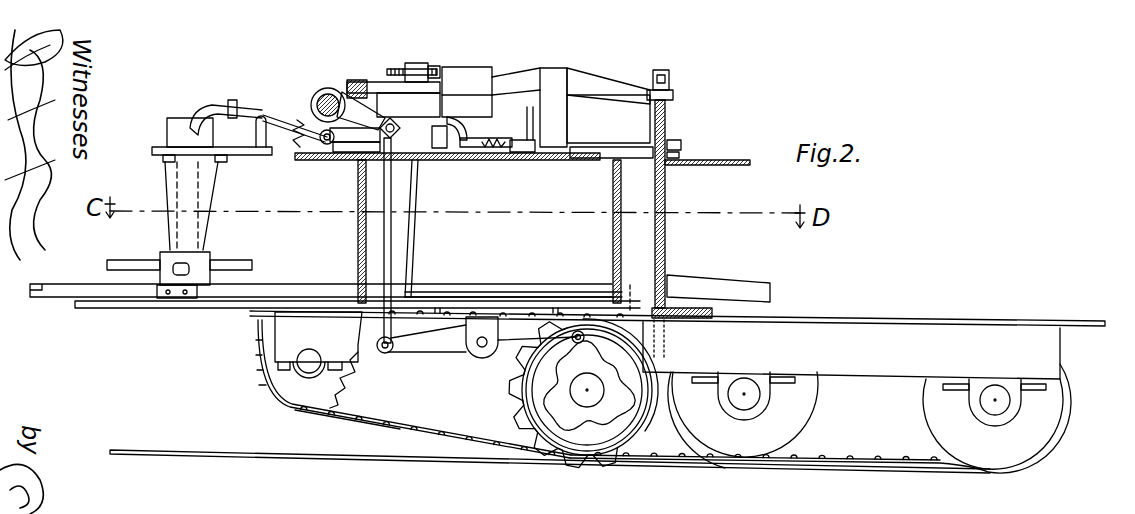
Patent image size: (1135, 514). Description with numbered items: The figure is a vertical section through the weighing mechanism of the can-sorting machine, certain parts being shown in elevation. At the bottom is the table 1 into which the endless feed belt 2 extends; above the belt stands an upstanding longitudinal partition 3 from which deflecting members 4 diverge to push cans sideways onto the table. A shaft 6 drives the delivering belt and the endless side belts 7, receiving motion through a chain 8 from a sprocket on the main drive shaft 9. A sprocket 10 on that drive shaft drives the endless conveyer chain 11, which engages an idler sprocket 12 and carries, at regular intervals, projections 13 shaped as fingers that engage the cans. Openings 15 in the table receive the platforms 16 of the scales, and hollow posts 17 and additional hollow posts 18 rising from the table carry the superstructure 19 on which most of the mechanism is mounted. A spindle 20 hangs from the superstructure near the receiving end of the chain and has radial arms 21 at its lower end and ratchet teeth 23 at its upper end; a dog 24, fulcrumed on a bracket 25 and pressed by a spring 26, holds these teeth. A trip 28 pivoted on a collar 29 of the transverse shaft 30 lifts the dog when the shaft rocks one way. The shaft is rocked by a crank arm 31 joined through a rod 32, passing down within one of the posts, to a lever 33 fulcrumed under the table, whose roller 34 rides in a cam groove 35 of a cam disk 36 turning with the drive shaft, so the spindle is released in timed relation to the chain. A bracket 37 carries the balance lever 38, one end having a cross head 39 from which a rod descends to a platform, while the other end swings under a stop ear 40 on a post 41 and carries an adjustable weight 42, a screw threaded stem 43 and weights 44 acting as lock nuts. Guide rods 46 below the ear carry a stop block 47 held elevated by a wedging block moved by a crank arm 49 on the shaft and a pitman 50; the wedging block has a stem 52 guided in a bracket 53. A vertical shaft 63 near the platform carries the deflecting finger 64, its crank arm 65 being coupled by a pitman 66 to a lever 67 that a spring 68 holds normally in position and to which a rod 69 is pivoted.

The table 1 is at (880, 338).
The endless feed belt 2 is at (93, 310).
The upstanding longitudinal partition 3 is at (68, 286).
The deflecting members 4 is at (289, 296).
The shaft 6 is at (744, 402).
The endless side belts 7 is at (993, 471).
The chain 8 is at (895, 465).
The main drive shaft 9 is at (585, 400).
The sprocket 10 is at (535, 430).
The endless conveyer chain 11 is at (452, 442).
The idler sprocket 12 is at (298, 397).
The projections 13 is at (368, 425).
The openings 15 is at (673, 103).
The platforms 16 is at (650, 292).
The hollow posts 17 is at (667, 194).
The hollow posts 18 is at (404, 274).
The superstructure 19 is at (742, 160).
The spindle 20 is at (173, 208).
The radial arms 21 is at (240, 262).
The ratchet teeth 23 is at (182, 118).
The dog 24 is at (218, 106).
The bracket 25 is at (260, 116).
The spring 26 is at (293, 148).
The trip 28 is at (308, 125).
The collar 29 is at (324, 130).
The transverse shaft 30 is at (322, 88).
The crank arm 31 is at (358, 116).
The rod 32 is at (403, 221).
The lever 33 is at (446, 346).
The roller 34 is at (578, 330).
The cam groove 35 is at (650, 355).
The cam disk 36 is at (612, 425).
The bracket 37 is at (556, 118).
The balance lever 38 is at (590, 78).
The cross head 39 is at (664, 74).
The stop ear 40 is at (366, 80).
The post 41 is at (349, 80).
The adjustable weight 42 is at (483, 72).
The screw threaded stem 43 is at (447, 68).
The weights 44 is at (420, 63).
The guide rods 46 is at (354, 80).
The stop block 47 is at (355, 162).
The crank arm 49 is at (352, 153).
The pitman 50 is at (396, 152).
The stem 52 is at (434, 148).
The bracket 53 is at (470, 149).
The vertical shaft 63 is at (680, 155).
The deflecting finger 64 is at (737, 287).
The crank arm 65 is at (671, 140).
The pitman 66 is at (628, 146).
The lever 67 is at (527, 118).
The spring 68 is at (513, 140).
The rod 69 is at (467, 100).